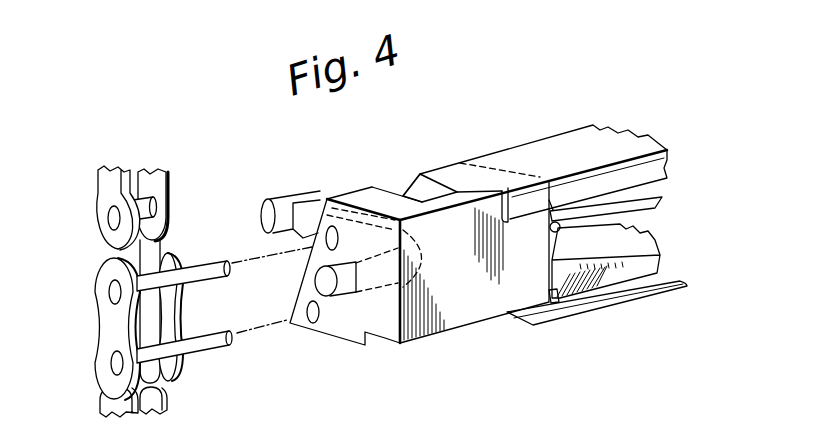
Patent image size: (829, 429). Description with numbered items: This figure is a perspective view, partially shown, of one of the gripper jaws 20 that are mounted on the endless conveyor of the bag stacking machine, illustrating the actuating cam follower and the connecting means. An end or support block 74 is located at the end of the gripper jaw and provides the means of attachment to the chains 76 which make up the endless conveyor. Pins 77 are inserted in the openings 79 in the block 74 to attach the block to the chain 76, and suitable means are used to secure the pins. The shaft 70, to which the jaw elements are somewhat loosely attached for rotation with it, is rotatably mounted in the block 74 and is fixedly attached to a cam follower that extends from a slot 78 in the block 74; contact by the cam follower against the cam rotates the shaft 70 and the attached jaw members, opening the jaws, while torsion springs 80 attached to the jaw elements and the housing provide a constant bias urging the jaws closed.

The gripper jaws 20 is at (613, 127).
The shaft 70 is at (318, 282).
The end or support blocks 74 is at (463, 300).
The chains 76 is at (283, 200).
The pins 77 is at (198, 337).
The slot 78 is at (398, 190).
The openings 79 is at (340, 239).
The torsion springs 80 is at (634, 203).